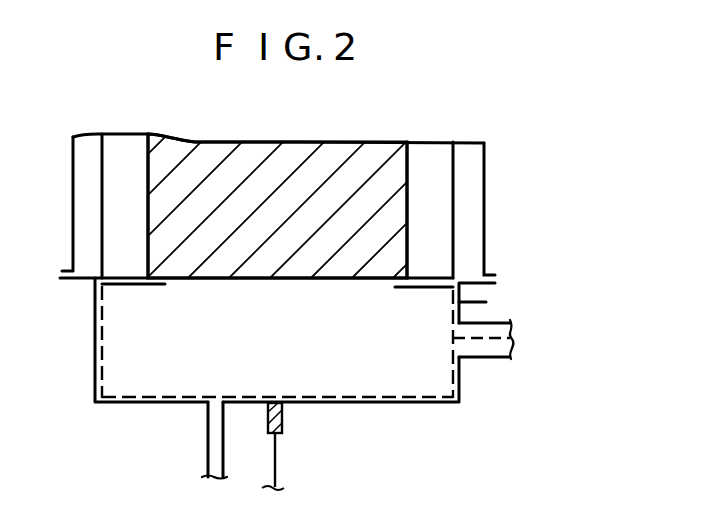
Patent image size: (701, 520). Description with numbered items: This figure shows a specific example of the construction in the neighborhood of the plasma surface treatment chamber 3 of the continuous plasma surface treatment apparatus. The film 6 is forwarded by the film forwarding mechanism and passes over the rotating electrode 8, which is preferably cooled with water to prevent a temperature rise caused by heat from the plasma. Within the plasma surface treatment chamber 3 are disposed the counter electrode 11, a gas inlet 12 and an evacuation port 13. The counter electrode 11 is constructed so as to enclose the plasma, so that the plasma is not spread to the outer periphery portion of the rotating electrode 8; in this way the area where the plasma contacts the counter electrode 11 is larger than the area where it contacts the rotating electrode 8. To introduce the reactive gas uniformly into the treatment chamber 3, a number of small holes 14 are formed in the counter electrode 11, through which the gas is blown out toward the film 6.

The plasma surface treatment chamber 3 is at (486, 302).
The film 6 is at (373, 158).
The rotating electrode 8 is at (455, 187).
The counter electrode 11 is at (102, 330).
The gas inlet 12 is at (208, 404).
The evacuation port 13 is at (512, 337).
The small holes 14 is at (253, 398).